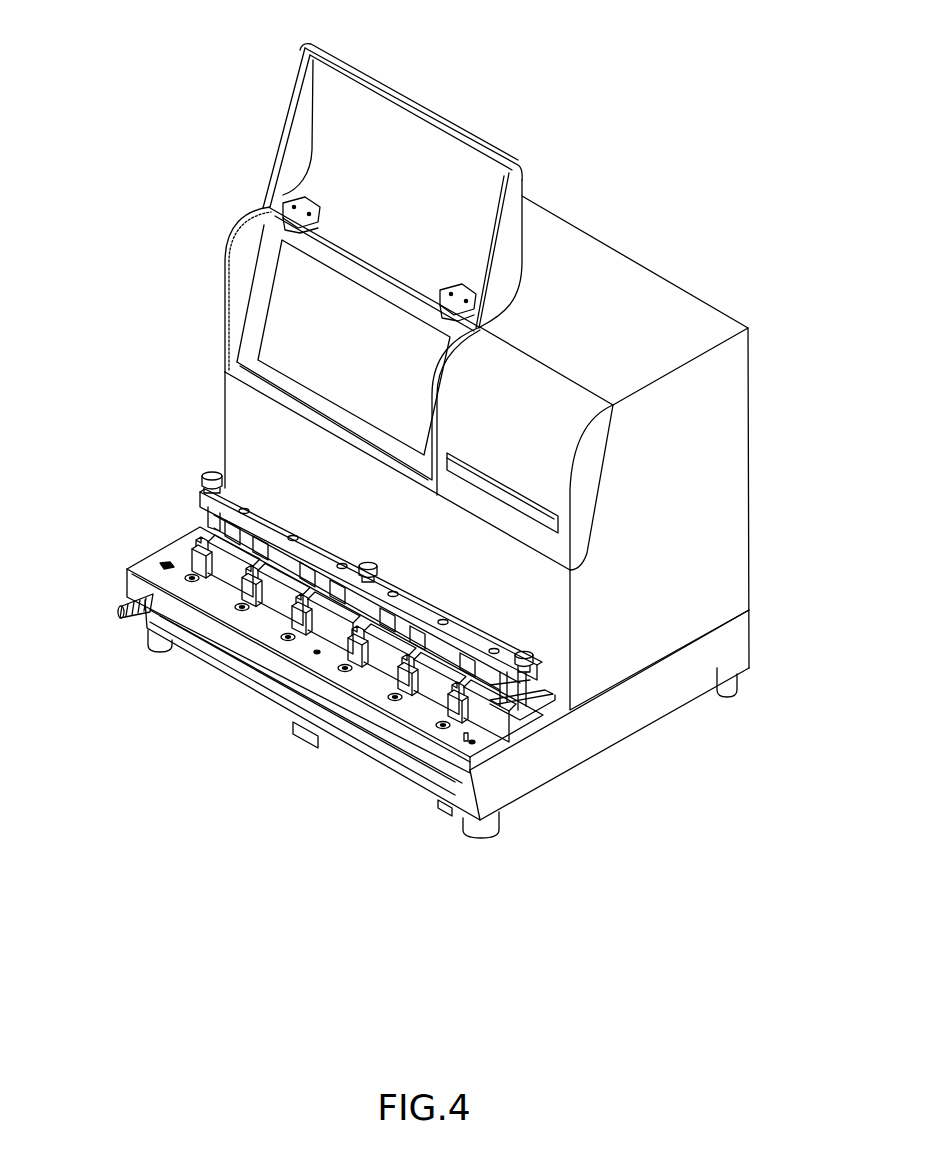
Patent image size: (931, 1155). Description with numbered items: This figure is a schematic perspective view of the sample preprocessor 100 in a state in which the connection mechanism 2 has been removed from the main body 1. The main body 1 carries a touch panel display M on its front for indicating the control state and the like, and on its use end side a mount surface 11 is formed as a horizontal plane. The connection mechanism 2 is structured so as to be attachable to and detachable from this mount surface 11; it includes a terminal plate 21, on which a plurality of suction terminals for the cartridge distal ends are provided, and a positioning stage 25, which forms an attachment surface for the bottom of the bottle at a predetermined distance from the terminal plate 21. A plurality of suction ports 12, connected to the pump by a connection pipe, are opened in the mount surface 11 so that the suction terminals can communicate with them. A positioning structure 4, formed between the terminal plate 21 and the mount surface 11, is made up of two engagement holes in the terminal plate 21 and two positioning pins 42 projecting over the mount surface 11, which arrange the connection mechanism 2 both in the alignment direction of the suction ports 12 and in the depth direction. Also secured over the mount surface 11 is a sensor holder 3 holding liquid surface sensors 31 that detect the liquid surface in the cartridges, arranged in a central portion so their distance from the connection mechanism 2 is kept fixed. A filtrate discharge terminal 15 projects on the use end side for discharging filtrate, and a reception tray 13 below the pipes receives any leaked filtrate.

The sample preprocessor 100 is at (703, 67).
The main body 1 is at (600, 240).
The touch panel display M is at (272, 289).
The connection mechanism 2 is at (188, 471).
The sensor holder 3 is at (485, 658).
The positioning structure 4 is at (521, 720).
The mount surface 11 is at (497, 723).
The suction port 12 is at (240, 605).
The reception tray 13 is at (300, 742).
The filtrate discharge terminal 15 is at (126, 618).
The terminal plate 21 is at (543, 720).
The positioning stage 25 is at (533, 683).
The liquid surface sensor 31 is at (287, 724).
The positioning pin 42 is at (140, 569).